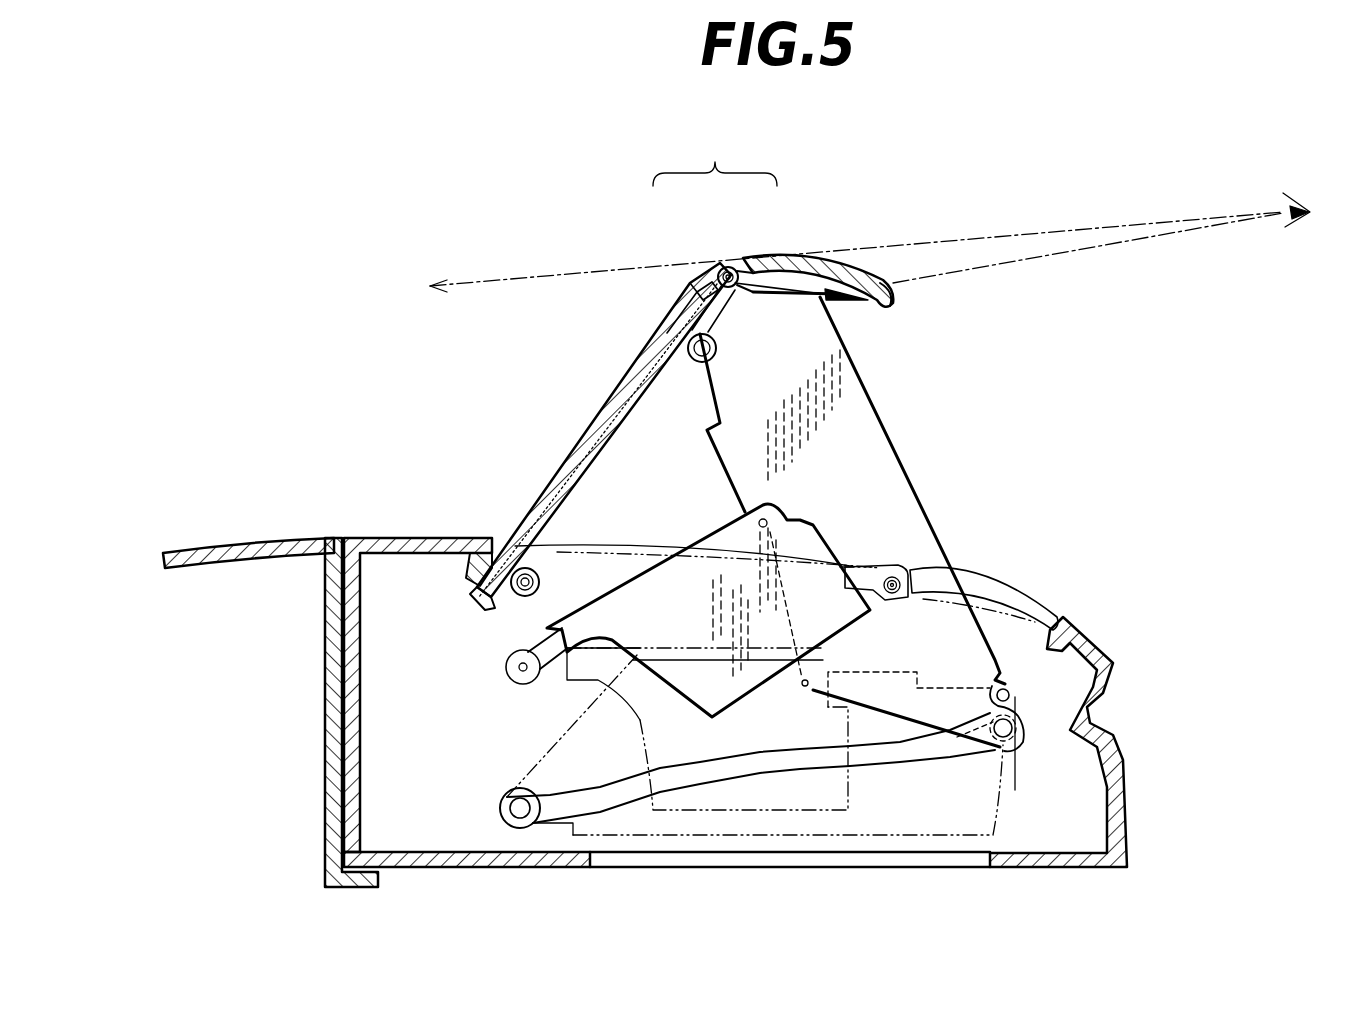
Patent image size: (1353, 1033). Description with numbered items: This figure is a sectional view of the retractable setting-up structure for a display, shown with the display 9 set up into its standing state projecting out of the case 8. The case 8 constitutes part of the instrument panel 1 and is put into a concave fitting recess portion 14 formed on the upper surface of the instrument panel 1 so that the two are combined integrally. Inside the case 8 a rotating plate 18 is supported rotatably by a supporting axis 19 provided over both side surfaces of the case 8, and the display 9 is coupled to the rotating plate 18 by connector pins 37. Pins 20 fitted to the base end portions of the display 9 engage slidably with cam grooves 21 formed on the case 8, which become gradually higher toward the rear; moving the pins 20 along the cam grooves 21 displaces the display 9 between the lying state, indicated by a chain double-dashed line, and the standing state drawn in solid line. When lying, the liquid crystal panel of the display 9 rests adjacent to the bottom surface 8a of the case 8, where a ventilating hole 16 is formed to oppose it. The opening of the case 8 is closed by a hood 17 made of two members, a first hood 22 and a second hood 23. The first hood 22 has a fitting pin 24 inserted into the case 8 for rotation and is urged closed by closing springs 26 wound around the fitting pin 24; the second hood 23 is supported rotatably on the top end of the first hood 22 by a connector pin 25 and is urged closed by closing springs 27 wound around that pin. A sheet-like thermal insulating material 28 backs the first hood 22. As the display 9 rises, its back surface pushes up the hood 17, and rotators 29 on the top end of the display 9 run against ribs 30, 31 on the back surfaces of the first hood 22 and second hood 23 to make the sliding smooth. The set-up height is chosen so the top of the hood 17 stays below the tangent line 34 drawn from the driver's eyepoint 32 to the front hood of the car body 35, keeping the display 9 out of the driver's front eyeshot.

The instrument panel 1 is at (310, 530).
The case 8 is at (1108, 680).
The bottom surface 8a is at (548, 866).
The display 9 is at (893, 452).
The fitting recess portion 14 is at (362, 612).
The ventilating hole 16 is at (867, 866).
The hood 17 is at (715, 155).
The rotating plate 18 is at (635, 590).
The supporting axis 19 is at (516, 682).
The pins 20 is at (1013, 747).
The cam grooves 21 is at (957, 753).
The first hood 22 is at (701, 278).
The second hood 23 is at (770, 262).
The fitting pin 24 is at (511, 600).
The connector pin 25 is at (742, 290).
The closing springs 26 is at (548, 549).
The closing springs 27 is at (746, 302).
The thermal insulating material 28 is at (578, 445).
The rotators 29 is at (696, 362).
The rib 30 is at (664, 336).
The rib 31 is at (872, 308).
The eyepoint 32 is at (1296, 197).
The tangent line 34 is at (968, 239).
The car body 35 is at (1072, 252).
The connector pins 37 is at (758, 521).